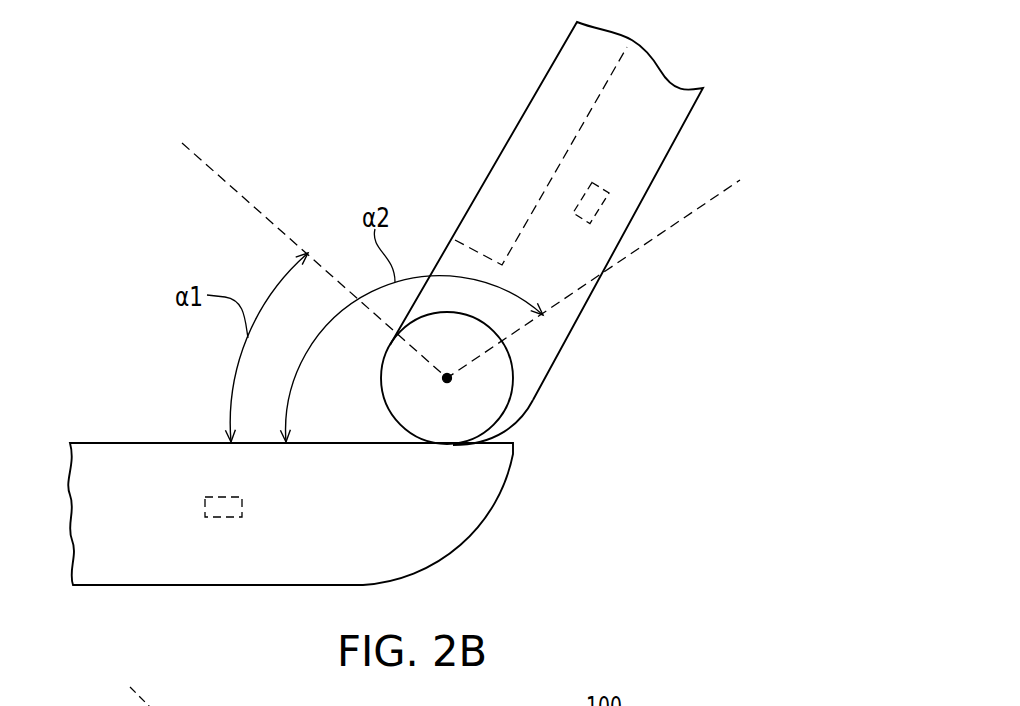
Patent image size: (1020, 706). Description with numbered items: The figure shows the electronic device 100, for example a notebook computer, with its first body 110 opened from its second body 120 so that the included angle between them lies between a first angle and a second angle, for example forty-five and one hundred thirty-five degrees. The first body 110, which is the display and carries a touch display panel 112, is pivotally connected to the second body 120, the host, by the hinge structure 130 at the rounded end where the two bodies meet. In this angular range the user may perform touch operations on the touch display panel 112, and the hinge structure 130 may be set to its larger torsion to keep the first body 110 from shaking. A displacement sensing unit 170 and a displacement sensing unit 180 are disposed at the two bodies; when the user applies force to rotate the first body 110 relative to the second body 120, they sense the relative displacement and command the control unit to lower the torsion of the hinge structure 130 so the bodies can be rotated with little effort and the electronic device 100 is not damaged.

The electronic device 100 is at (803, 117).
The first body 110 is at (565, 260).
The touch display panel 112 is at (590, 112).
The second body 120 is at (157, 542).
The hinge structure 130 is at (533, 427).
The displacement sensing unit 170 is at (232, 517).
The displacement sensing unit 180 is at (610, 192).